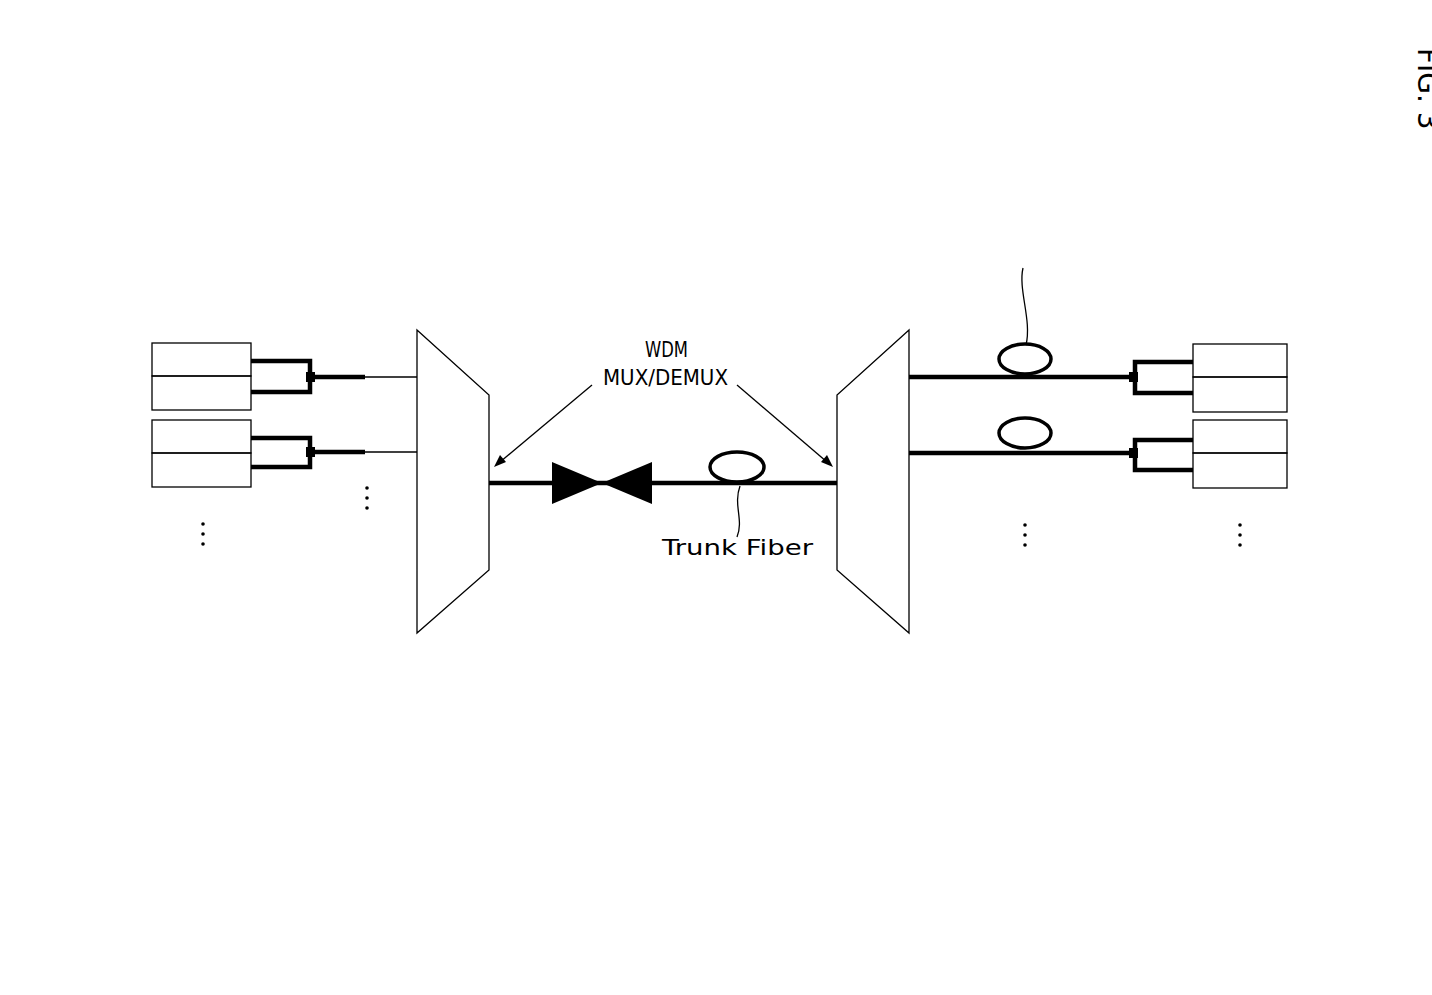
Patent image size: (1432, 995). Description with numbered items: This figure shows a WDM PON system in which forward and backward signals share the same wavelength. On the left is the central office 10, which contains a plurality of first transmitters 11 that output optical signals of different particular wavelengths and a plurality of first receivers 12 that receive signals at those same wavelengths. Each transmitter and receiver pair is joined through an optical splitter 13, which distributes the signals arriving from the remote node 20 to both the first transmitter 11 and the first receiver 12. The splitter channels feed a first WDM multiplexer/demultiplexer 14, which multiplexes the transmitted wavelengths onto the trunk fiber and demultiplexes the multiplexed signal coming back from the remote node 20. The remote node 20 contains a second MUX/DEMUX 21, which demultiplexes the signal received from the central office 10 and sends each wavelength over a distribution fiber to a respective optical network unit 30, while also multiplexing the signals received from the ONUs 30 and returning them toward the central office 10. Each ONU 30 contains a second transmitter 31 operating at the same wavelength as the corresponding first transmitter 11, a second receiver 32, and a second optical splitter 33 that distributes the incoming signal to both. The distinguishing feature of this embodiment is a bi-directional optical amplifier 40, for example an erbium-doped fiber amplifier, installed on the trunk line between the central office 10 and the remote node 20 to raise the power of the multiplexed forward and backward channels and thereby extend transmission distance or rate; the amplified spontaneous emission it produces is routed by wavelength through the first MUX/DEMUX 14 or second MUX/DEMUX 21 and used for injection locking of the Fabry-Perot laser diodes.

The central office 10 is at (376, 722).
The first transmitter 11 is at (152, 362).
The first receiver 12 is at (152, 396).
The optical splitter 13 is at (313, 458).
The first WDM multiplexer/demultiplexer 14 is at (453, 360).
The remote node 20 is at (915, 722).
The second MUX/DEMUX 21 is at (873, 360).
The optical network unit 30 is at (1159, 722).
The second transmitter 31 is at (1287, 362).
The second receiver 32 is at (1287, 395).
The second optical splitter 33 is at (1128, 460).
The bi-directional optical amplifier 40 is at (569, 506).